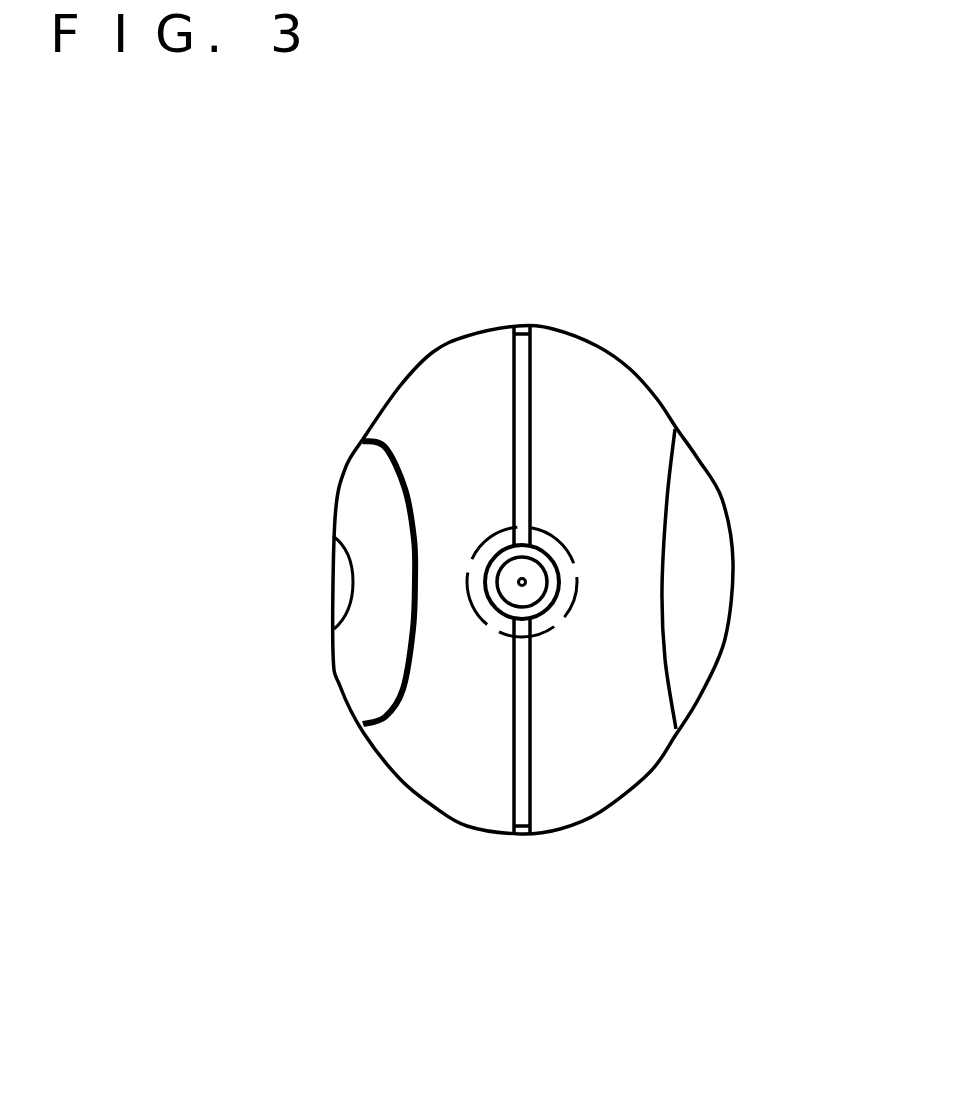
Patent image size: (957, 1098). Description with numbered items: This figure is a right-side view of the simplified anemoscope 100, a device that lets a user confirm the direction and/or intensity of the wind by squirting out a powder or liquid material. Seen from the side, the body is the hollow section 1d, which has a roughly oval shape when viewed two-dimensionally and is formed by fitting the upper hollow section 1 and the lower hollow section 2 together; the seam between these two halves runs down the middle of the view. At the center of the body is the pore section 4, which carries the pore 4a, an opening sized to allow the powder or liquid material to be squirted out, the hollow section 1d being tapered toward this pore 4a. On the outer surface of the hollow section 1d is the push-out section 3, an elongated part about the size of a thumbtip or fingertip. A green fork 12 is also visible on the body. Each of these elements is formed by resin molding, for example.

The simplified anemoscope 100 is at (509, 574).
The upper hollow section 1 is at (445, 377).
The lower hollow section 2 is at (583, 377).
The hollow section 1d is at (534, 726).
The green fork 12 is at (363, 507).
The push-out section 3 is at (703, 550).
The pore section 4 is at (538, 588).
The pore 4a is at (520, 583).